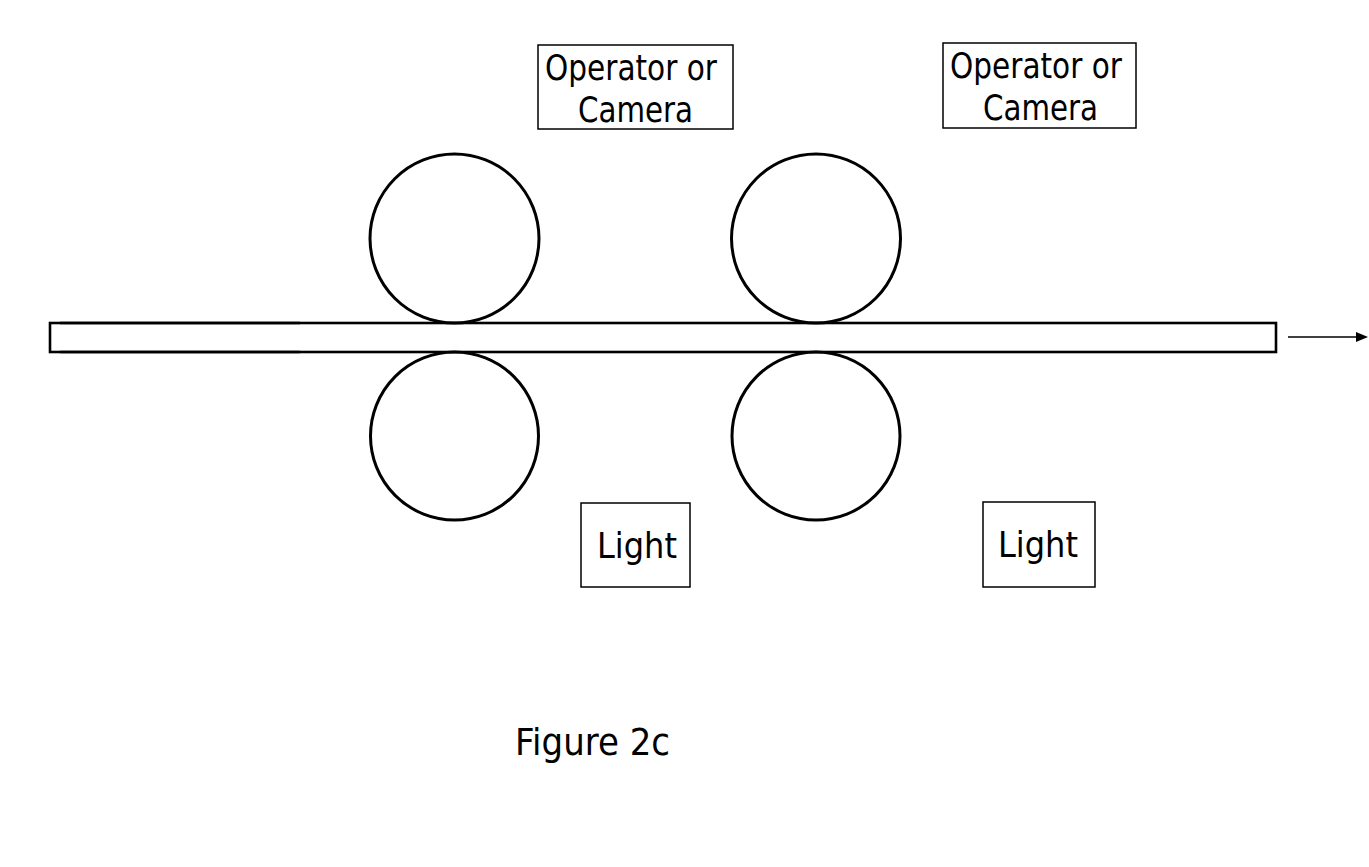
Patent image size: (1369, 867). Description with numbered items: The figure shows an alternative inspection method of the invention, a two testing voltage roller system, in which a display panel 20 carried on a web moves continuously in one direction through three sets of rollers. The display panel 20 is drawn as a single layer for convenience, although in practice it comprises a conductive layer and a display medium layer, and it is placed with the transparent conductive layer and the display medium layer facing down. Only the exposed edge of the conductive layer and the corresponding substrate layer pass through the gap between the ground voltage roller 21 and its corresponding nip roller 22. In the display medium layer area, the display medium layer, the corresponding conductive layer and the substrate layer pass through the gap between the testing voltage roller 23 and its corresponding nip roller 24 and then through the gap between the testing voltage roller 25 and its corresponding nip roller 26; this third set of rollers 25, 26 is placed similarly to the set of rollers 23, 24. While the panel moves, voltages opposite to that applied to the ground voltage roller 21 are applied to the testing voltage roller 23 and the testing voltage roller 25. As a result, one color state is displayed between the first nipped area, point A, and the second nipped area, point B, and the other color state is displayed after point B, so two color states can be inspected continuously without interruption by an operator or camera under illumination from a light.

The display panel 20 is at (1243, 327).
The ground voltage roller 21 is at (180, 376).
The nip roller 22 is at (180, 296).
The testing voltage roller 23 is at (455, 436).
The nip roller 24 is at (454, 238).
The testing voltage roller 25 is at (816, 436).
The nip roller 26 is at (816, 238).
The first nipped area A is at (443, 333).
The second nipped area B is at (830, 330).